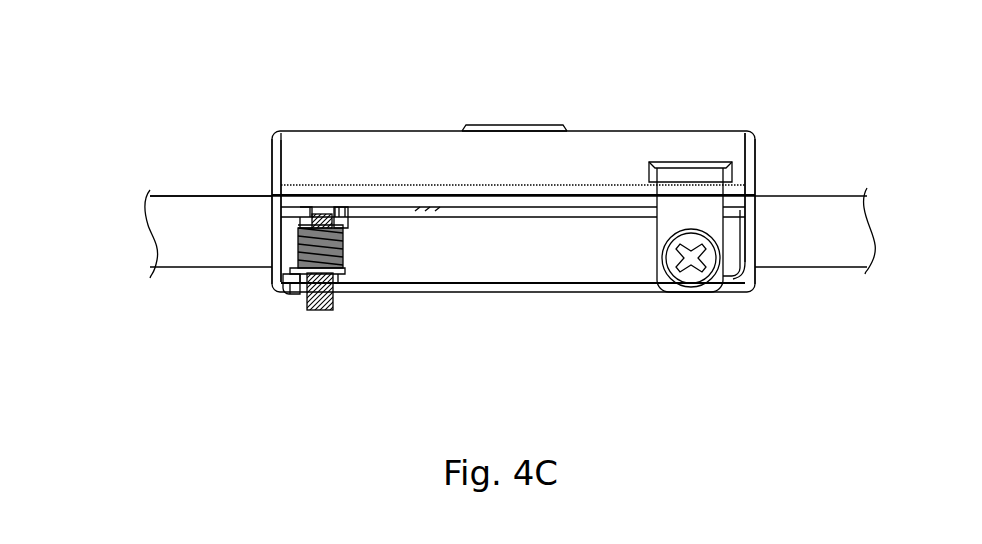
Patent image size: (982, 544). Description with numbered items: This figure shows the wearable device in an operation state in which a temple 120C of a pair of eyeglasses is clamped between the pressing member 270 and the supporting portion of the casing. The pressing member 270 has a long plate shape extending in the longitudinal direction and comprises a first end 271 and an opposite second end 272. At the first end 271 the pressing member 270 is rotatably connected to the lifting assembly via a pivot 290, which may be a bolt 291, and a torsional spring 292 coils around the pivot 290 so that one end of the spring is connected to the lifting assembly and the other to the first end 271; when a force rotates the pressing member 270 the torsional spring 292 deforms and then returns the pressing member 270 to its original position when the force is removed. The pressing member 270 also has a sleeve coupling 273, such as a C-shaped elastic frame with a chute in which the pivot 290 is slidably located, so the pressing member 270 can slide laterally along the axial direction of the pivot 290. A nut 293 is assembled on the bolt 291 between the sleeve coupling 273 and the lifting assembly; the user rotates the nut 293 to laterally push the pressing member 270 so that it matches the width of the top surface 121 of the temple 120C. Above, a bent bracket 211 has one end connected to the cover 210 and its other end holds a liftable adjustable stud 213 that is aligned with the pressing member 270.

The temple 120C is at (172, 194).
The top surface 121 is at (208, 230).
The cover 210 is at (437, 150).
The bracket 211 is at (681, 193).
The adjustable stud 213 is at (683, 272).
The pressing member 270 is at (580, 263).
The first end 271 is at (277, 238).
The second end 272 is at (748, 242).
The sleeve coupling 273 is at (338, 220).
The pivot 290 is at (313, 311).
The bolt 291 is at (317, 311).
The torsional spring 292 is at (346, 265).
The nut 293 is at (320, 212).